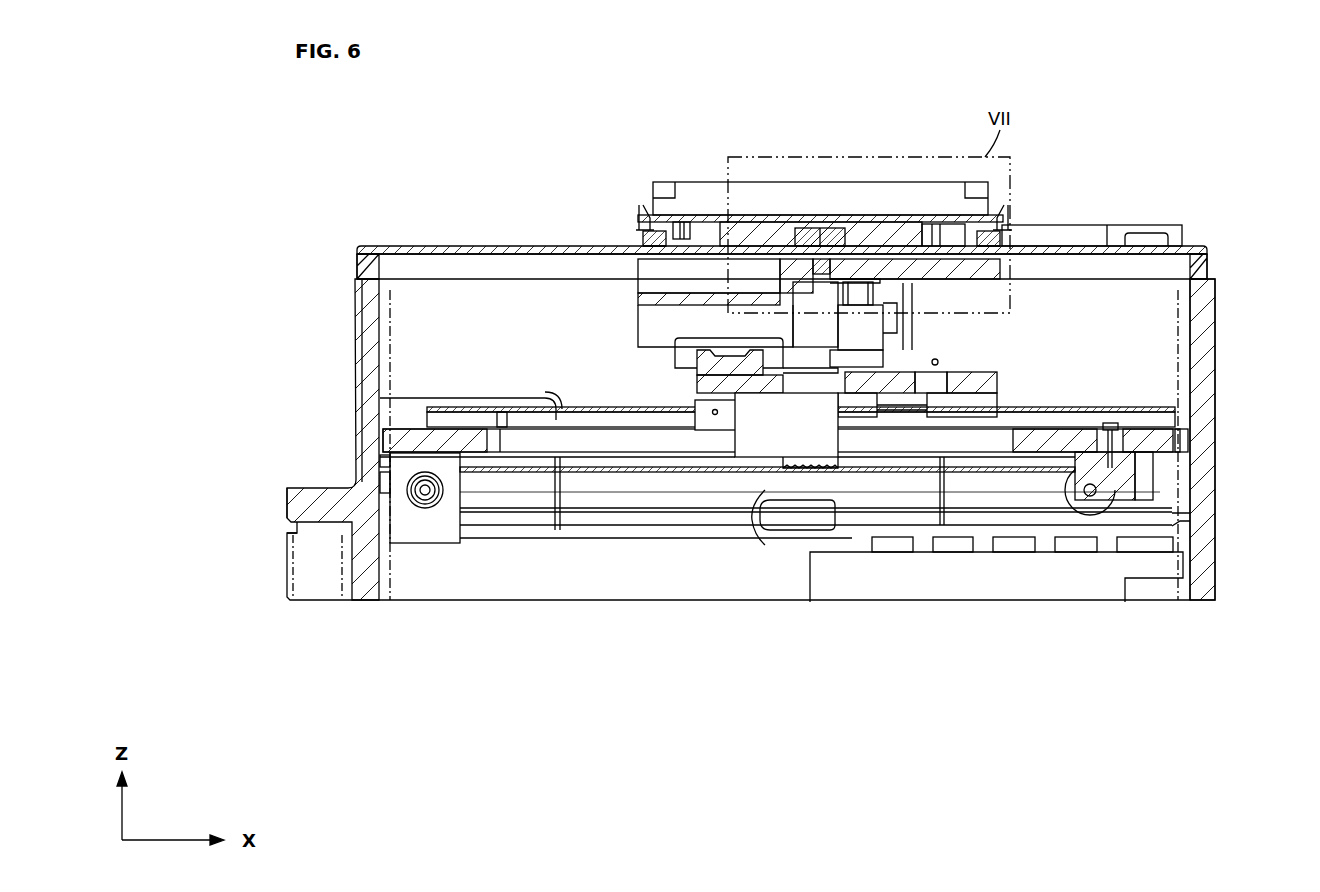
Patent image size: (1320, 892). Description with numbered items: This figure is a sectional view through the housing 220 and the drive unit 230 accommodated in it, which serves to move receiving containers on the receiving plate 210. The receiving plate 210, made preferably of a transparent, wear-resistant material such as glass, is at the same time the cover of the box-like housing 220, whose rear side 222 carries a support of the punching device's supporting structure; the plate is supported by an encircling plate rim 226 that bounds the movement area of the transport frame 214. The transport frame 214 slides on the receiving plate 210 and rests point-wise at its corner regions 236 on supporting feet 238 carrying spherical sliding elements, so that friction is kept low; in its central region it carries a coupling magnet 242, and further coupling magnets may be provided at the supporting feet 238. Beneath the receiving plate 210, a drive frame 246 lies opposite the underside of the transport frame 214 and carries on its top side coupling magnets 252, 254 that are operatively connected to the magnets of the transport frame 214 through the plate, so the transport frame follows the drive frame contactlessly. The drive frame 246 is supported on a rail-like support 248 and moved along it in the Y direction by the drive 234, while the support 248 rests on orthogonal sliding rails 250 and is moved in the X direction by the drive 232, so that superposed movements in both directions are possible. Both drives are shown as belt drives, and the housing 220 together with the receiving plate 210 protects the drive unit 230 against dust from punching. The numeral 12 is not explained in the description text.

The device 12 is at (787, 196).
The receiving plate 210 is at (488, 246).
The transport frame 214 is at (895, 235).
The housing 220 is at (368, 357).
The rear side 222 is at (330, 437).
The plate rim 226 is at (365, 250).
The drive unit 230 is at (826, 452).
The drive 232 is at (718, 478).
The drive 234 is at (908, 333).
The corner regions 236 is at (620, 195).
The supporting feet 238 is at (650, 236).
The coupling magnet 242 is at (818, 236).
The drive frame 246 is at (948, 267).
The rail-like support 248 is at (705, 363).
The sliding rails 250 is at (580, 420).
The coupling magnet 252 is at (812, 265).
The coupling magnet 254 is at (650, 270).